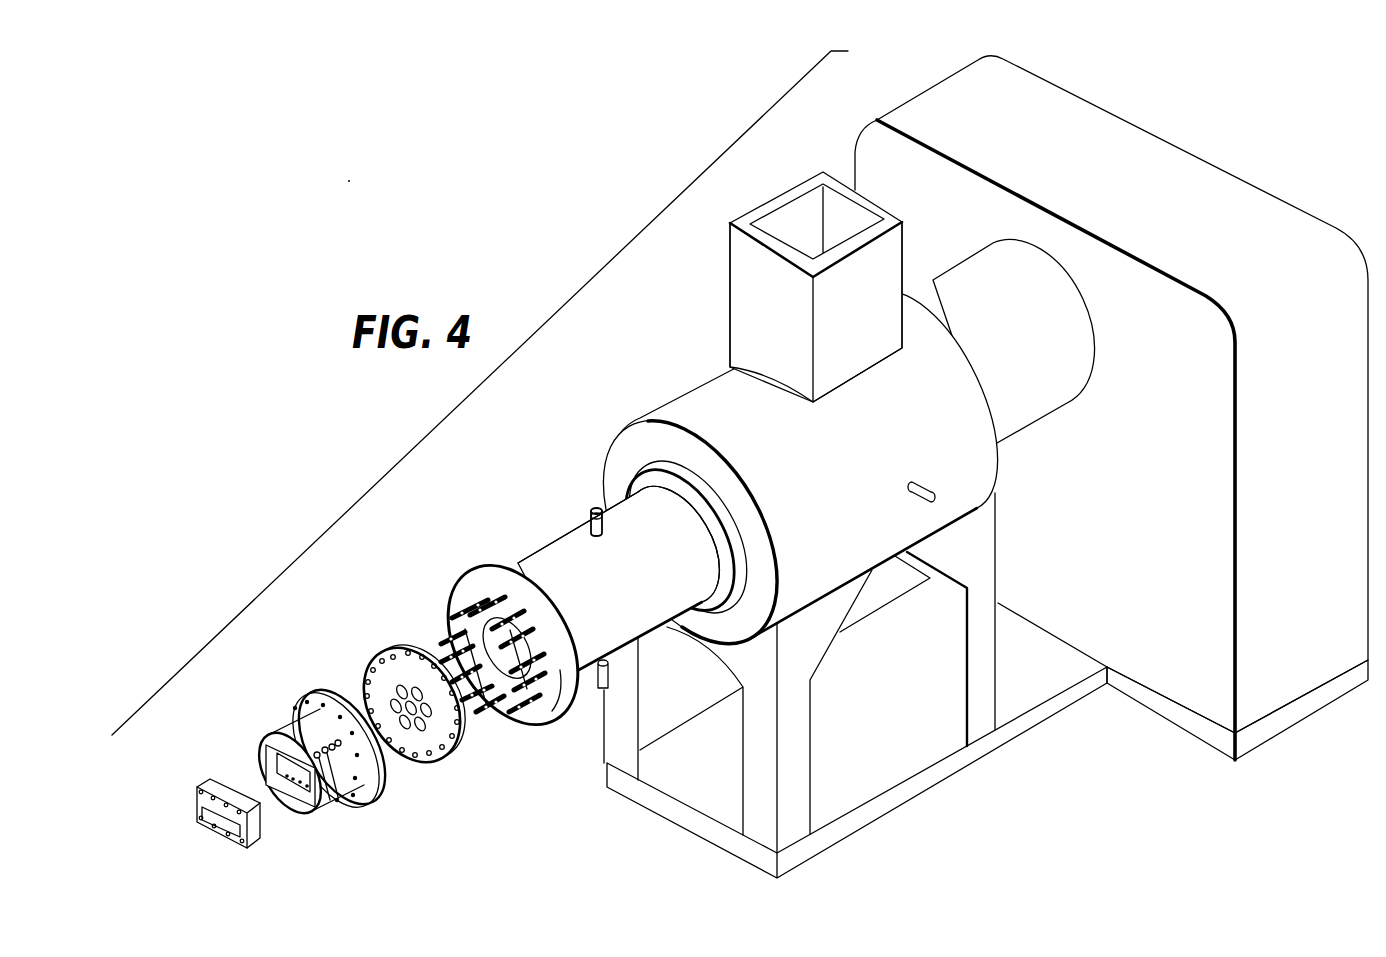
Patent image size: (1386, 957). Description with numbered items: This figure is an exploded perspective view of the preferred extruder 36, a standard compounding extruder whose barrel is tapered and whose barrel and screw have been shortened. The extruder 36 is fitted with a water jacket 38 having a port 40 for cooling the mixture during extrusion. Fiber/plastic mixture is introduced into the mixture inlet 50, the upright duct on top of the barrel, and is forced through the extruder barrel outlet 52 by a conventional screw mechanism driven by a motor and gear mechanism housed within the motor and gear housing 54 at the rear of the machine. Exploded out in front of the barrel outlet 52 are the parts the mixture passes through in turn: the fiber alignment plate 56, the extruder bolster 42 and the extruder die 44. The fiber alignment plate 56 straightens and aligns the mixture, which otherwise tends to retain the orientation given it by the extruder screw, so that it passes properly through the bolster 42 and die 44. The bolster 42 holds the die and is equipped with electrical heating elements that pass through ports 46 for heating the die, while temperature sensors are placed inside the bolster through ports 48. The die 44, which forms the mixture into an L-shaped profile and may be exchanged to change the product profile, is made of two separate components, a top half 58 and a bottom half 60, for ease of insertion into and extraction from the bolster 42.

The extruder 36 is at (566, 459).
The water jacket 38 is at (537, 558).
The port 40 is at (590, 511).
The bolster 42 is at (292, 731).
The die 44 is at (187, 782).
The ports 46 is at (338, 743).
The ports 48 is at (304, 718).
The mixture inlet 50 is at (783, 217).
The extruder barrel outlet 52 is at (453, 607).
The motor and gear housing 54 is at (1238, 176).
The fiber alignment plate 56 is at (385, 647).
The top half 58 is at (247, 809).
The bottom half 60 is at (252, 838).